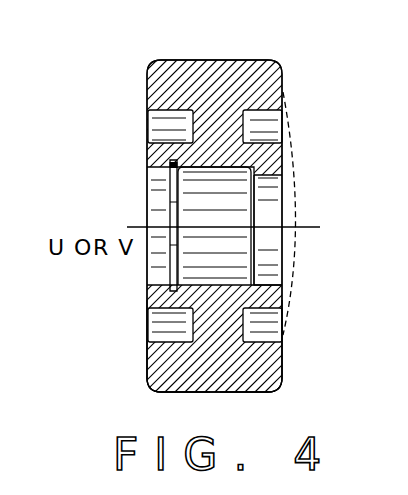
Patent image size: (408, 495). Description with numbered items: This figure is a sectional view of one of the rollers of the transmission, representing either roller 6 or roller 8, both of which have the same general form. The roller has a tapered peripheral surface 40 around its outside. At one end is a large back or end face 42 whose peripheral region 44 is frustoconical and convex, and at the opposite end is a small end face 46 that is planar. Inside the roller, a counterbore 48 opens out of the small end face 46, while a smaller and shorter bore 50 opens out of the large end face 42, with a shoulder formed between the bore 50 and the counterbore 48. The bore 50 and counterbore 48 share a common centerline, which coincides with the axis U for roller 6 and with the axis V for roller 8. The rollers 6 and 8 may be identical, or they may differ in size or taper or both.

The roller 6 is at (163, 226).
The roller 8 is at (124, 123).
The tapered peripheral surface 40 is at (212, 60).
The large end face 42 is at (283, 291).
The peripheral region 44 is at (280, 363).
The small end face 46 is at (147, 358).
The counterbore 48 is at (168, 177).
The bore 50 is at (271, 178).